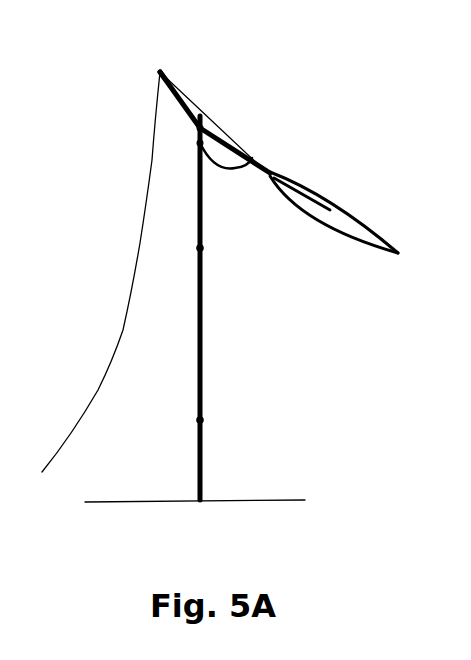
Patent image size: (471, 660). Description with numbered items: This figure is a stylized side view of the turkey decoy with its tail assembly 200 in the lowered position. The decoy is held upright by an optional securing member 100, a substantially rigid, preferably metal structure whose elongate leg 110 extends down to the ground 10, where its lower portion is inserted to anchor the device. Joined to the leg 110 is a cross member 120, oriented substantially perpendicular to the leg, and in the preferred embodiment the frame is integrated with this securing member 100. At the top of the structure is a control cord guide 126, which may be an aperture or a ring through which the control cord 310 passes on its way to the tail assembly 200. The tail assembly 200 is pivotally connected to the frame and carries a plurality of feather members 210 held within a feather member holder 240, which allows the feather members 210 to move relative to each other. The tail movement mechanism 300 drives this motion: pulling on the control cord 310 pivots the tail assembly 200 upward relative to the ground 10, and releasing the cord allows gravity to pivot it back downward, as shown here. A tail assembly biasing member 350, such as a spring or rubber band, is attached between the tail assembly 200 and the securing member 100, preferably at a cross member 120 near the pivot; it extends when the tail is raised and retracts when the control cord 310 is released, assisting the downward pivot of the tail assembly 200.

The ground 10 is at (258, 500).
The securing member 100 is at (231, 308).
The leg 110 is at (203, 350).
The cross member 120 is at (197, 420).
The control cord guide 126 is at (158, 71).
The tail assembly 200 is at (292, 162).
The feather member 210 is at (357, 213).
The feather member holder 240 is at (233, 143).
The tail movement mechanism 300 is at (153, 272).
The control cord 310 is at (138, 245).
The tail assembly biasing member 350 is at (222, 169).